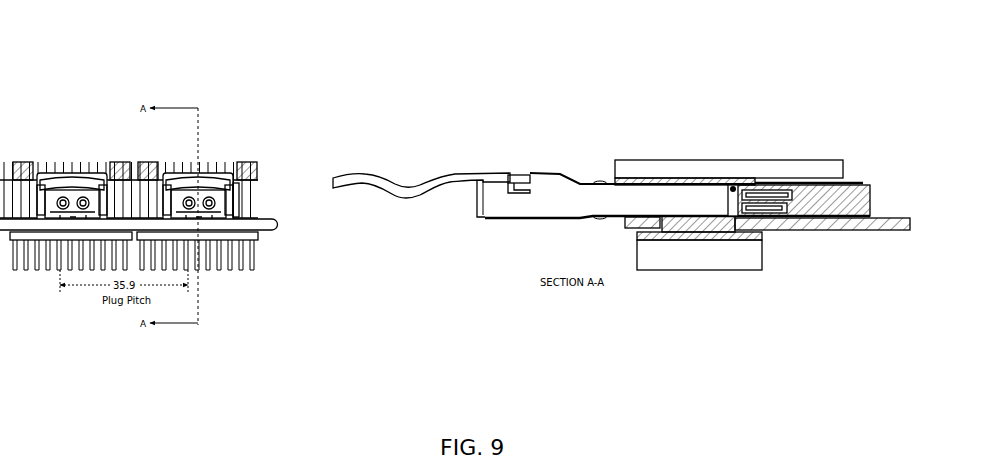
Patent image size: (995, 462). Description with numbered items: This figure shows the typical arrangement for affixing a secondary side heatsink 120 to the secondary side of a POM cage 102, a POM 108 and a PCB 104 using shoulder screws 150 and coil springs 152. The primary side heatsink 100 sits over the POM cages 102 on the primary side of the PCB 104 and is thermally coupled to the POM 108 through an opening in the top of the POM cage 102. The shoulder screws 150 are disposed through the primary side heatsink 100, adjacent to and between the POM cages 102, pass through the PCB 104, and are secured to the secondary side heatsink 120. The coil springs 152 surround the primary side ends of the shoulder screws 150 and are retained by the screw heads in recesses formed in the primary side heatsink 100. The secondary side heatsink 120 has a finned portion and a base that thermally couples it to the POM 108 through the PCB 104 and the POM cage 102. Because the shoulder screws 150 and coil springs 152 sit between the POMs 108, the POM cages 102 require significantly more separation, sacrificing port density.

The primary side heatsink 100 is at (224, 153).
The POM cage 102 is at (113, 194).
The PCB 104 is at (276, 239).
The POM 108 is at (83, 162).
The secondary side heatsink 120 is at (238, 281).
The shoulder screws 150 is at (262, 190).
The coil springs 152 is at (263, 153).